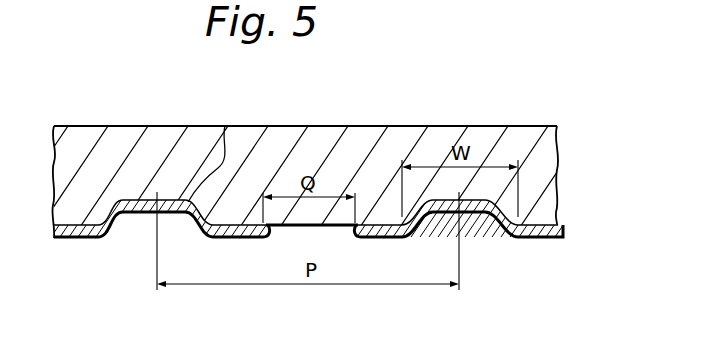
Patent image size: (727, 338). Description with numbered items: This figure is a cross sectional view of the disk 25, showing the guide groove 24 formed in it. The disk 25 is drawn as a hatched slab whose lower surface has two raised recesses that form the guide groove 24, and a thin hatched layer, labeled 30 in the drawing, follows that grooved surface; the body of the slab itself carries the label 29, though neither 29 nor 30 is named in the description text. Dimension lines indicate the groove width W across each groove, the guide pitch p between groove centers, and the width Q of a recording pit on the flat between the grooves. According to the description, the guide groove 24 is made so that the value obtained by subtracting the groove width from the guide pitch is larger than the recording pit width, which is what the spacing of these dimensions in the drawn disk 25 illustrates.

The guide groove 24 is at (223, 126).
The disk 25 is at (313, 126).
The substrate 29 is at (547, 160).
The electrode layer 30 is at (563, 229).